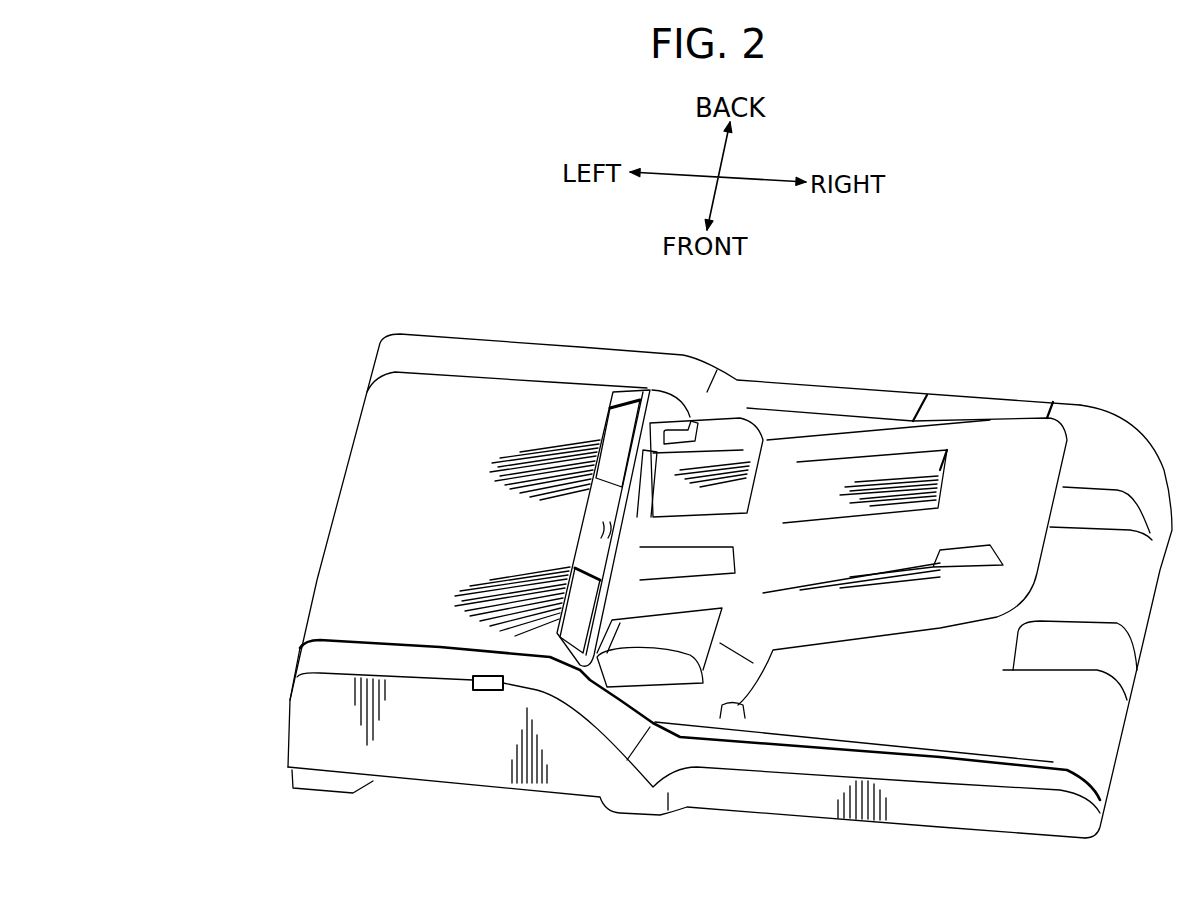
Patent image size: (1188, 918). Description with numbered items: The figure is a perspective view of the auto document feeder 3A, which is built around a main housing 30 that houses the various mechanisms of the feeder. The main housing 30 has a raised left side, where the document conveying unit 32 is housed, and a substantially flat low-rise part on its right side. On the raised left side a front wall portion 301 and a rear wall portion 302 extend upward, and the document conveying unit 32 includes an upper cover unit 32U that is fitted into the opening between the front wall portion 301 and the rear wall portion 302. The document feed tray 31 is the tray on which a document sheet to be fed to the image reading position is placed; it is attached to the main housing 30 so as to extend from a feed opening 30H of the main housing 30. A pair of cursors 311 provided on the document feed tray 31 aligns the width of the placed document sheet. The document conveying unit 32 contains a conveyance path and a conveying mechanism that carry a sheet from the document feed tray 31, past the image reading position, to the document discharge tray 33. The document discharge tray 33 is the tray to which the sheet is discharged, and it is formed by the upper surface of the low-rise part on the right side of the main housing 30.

The auto document feeder 3A is at (868, 342).
The main housing 30 is at (463, 750).
The feed opening 30H is at (625, 541).
The front wall portion 301 is at (330, 658).
The rear wall portion 302 is at (443, 360).
The document feed tray 31 is at (984, 462).
The cursors 311 is at (720, 420).
The document conveying unit 32 is at (312, 497).
The upper cover unit 32U is at (357, 577).
The document discharge tray 33 is at (955, 724).